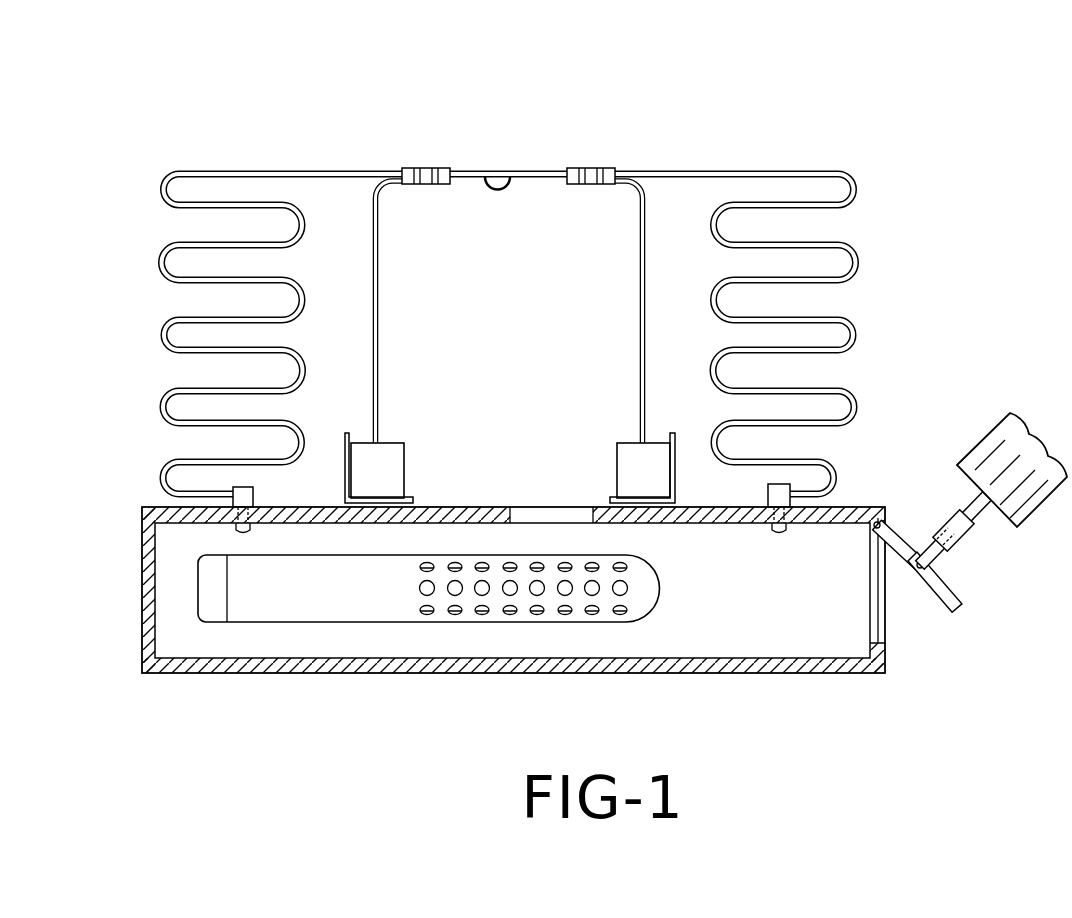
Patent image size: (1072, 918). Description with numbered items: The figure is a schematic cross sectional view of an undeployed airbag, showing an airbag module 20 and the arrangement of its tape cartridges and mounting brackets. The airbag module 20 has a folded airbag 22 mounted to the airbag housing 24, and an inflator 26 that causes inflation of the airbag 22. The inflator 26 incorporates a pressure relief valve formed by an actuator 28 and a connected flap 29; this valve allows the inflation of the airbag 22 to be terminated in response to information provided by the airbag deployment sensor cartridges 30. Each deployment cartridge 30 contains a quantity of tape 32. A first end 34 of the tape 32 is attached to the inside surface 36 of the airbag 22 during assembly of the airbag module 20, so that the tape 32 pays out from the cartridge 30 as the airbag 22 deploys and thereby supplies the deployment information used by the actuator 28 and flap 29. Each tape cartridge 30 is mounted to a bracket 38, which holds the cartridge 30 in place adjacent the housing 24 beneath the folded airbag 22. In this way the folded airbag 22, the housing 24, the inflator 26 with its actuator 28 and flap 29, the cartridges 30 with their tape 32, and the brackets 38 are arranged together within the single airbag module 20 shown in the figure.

The airbag module 20 is at (100, 135).
The folded airbag 22 is at (855, 318).
The airbag housing 24 is at (216, 662).
The inflator 26 is at (370, 603).
The actuator 28 is at (963, 533).
The flap 29 is at (948, 600).
The airbag deployment sensor cartridge 30 is at (570, 410).
The tape 32 is at (641, 322).
The first end of the tape 34 is at (583, 185).
The inside surface of the airbag 36 is at (491, 172).
The bracket 38 is at (678, 437).